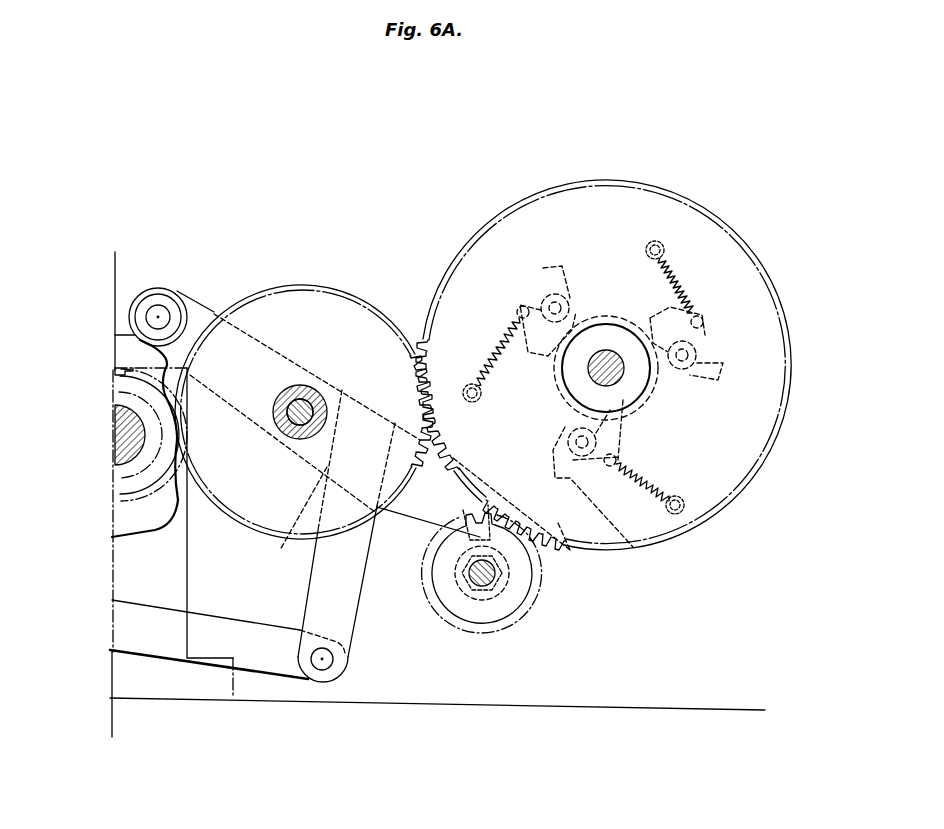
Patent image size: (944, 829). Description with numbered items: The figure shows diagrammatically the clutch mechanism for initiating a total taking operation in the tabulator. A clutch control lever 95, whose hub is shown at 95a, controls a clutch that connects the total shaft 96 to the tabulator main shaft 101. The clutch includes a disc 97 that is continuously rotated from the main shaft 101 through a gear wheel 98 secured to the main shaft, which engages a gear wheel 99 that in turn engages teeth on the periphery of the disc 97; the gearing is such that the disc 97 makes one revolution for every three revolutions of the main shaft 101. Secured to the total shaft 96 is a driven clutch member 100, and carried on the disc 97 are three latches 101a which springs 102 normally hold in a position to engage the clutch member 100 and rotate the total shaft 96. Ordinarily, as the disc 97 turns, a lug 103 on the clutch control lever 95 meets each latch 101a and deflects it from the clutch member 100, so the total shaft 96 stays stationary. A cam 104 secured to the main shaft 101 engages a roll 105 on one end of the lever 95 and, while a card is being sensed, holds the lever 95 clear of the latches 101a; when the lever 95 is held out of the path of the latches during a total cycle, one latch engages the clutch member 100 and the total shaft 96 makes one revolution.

The clutch control lever 95 is at (327, 573).
The lever hub shaft 95a is at (303, 393).
The total shaft 96 is at (607, 349).
The disc 97 is at (760, 403).
The gear wheel 98 is at (150, 492).
The gear wheel 99 is at (298, 285).
The driven clutch member 100 is at (650, 401).
The tabulator main shaft 101 is at (124, 447).
The latches 101a is at (802, 355).
The springs 102 is at (672, 258).
The lug 103 is at (566, 549).
The cam 104 is at (137, 523).
The roll 105 is at (153, 302).